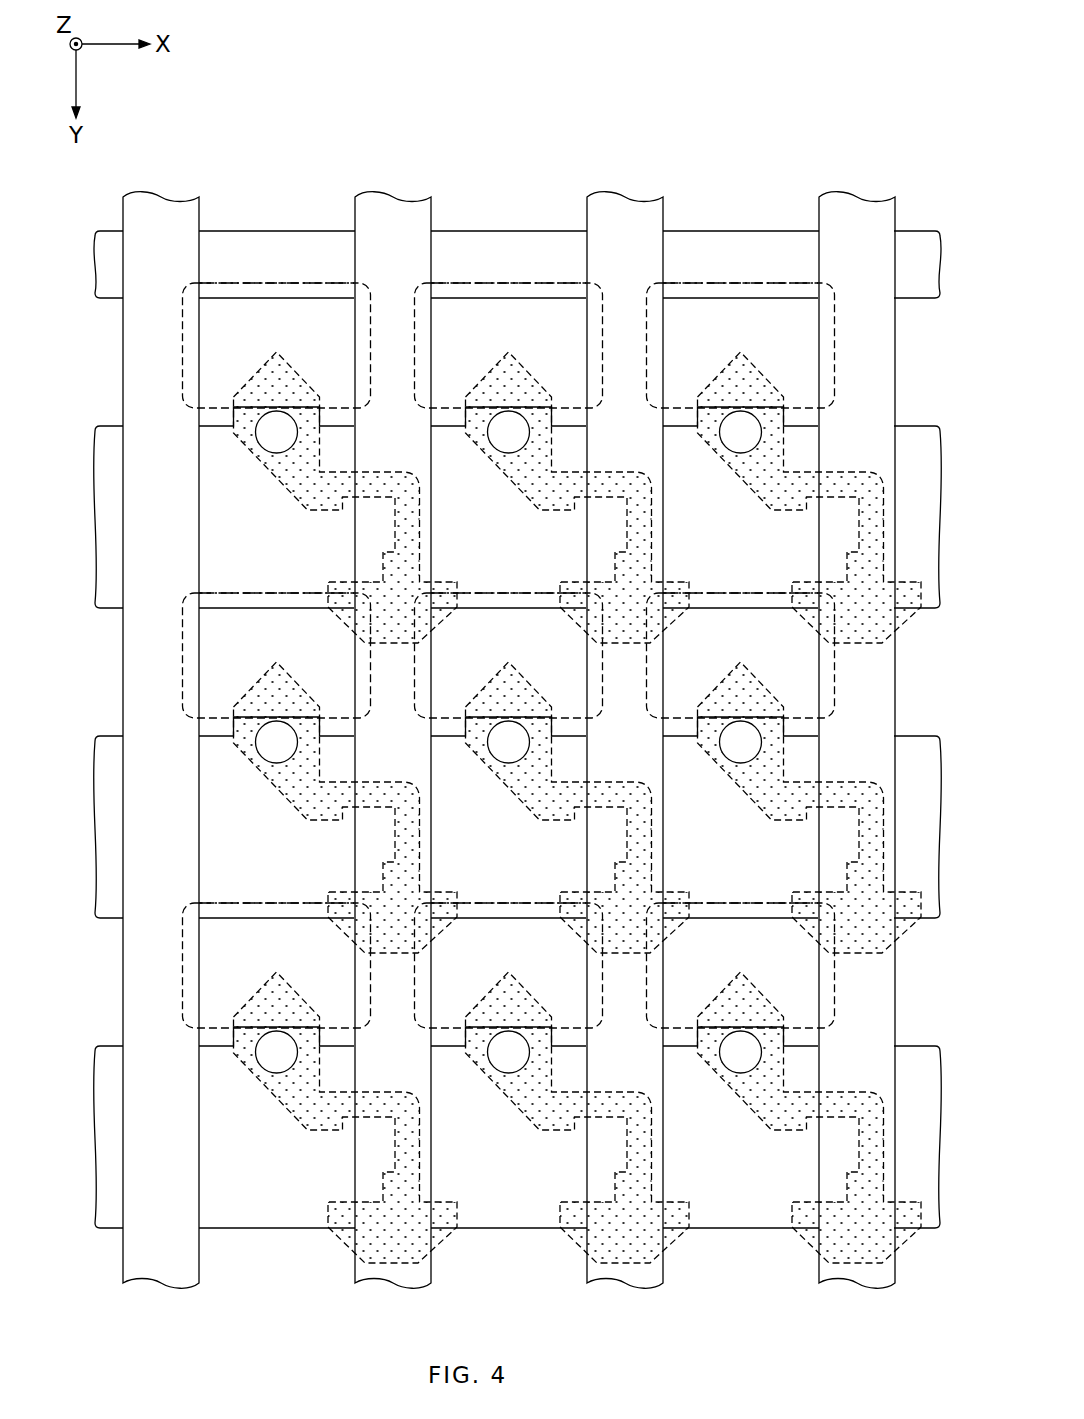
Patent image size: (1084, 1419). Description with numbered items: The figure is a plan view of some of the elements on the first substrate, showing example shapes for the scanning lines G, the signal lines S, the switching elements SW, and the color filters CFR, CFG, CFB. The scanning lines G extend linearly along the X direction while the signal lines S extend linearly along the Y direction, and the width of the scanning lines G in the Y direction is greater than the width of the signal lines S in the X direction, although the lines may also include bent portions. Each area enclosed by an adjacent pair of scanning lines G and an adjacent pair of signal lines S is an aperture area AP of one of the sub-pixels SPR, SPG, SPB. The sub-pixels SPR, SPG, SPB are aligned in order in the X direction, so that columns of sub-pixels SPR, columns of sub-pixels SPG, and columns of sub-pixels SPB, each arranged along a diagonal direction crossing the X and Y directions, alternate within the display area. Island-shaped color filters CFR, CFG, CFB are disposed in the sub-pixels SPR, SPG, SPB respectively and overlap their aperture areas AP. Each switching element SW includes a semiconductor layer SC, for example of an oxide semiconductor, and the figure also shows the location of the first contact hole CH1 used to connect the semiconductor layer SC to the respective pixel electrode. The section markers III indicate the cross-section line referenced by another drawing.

The signal line S is at (123, 197).
The scanning line G is at (906, 231).
The red color filter CFR is at (272, 282).
The green color filter CFG is at (504, 282).
The blue color filter CFB is at (736, 282).
The aperture area AP is at (324, 310).
The red sub-pixel SPR is at (250, 332).
The green sub-pixel SPG is at (482, 332).
The blue sub-pixel SPB is at (714, 332).
The first contact hole CH1 is at (254, 446).
The semiconductor layer SC is at (268, 475).
The switching element SW is at (563, 807).
The section line III- III is at (183, 333).